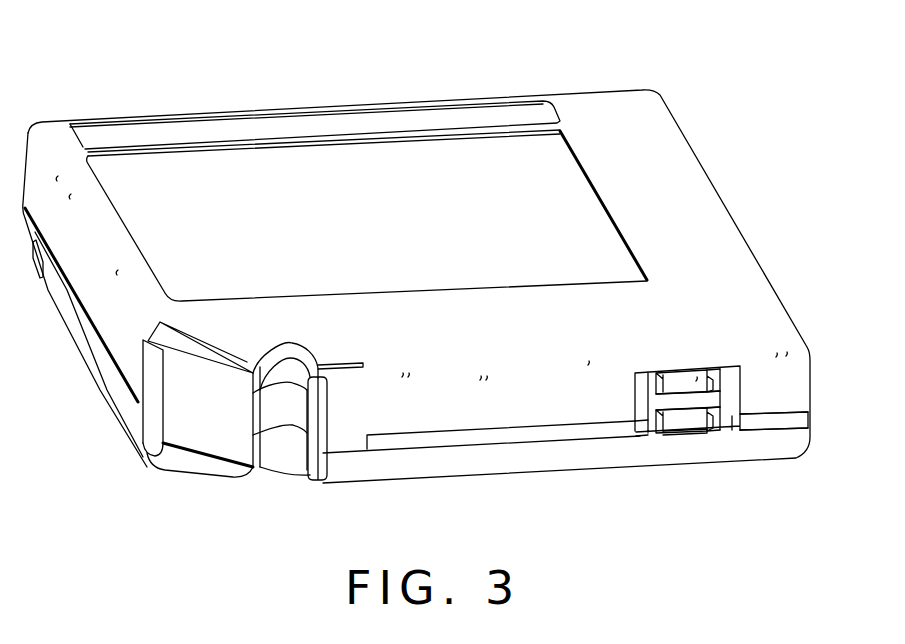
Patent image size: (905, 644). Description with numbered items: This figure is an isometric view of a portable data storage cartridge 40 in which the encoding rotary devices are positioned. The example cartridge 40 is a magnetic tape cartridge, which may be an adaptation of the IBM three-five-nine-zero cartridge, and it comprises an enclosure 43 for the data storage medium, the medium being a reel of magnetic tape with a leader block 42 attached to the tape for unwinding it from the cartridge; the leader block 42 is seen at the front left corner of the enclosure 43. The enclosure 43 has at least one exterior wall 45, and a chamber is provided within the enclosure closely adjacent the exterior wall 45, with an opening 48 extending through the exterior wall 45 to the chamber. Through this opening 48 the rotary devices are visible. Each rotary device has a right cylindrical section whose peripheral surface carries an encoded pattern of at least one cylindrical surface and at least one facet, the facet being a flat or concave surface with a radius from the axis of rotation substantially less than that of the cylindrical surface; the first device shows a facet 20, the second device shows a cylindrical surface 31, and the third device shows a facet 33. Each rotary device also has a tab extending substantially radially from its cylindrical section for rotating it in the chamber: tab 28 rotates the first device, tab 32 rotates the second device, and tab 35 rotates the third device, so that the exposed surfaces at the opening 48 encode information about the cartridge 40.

The portable data storage cartridge 40 is at (512, 69).
The enclosure 43 is at (740, 212).
The leader block 42 is at (283, 448).
The facet 20 is at (690, 378).
The tab 28 is at (636, 372).
The tab 32 is at (743, 365).
The cylindrical surface 31 is at (687, 402).
The tab 35 is at (641, 437).
The facet 33 is at (687, 420).
The opening 48 is at (687, 430).
The exterior wall 45 is at (751, 403).